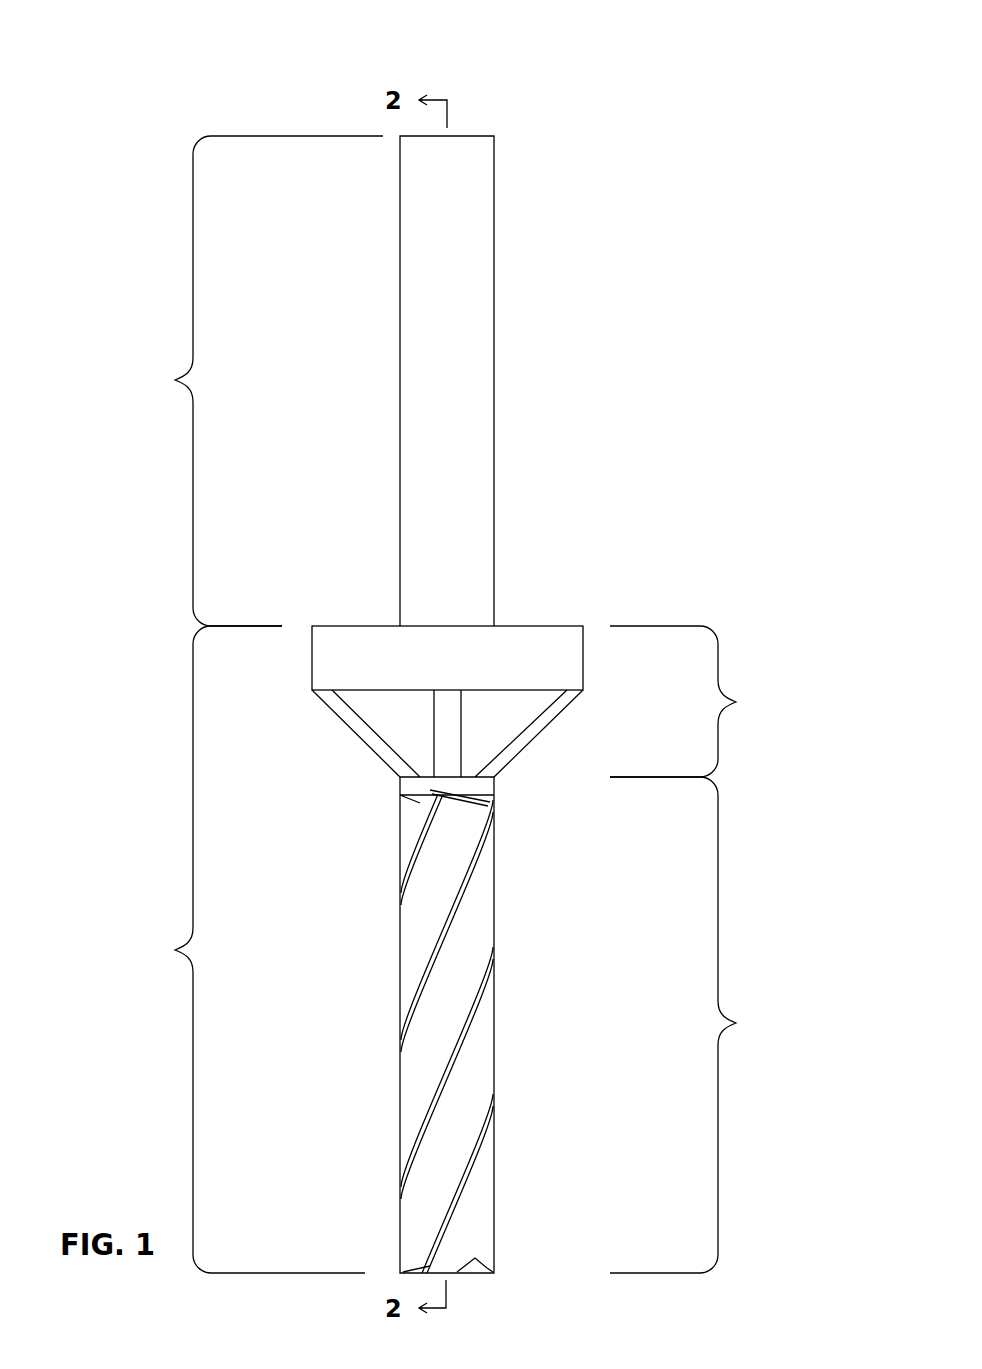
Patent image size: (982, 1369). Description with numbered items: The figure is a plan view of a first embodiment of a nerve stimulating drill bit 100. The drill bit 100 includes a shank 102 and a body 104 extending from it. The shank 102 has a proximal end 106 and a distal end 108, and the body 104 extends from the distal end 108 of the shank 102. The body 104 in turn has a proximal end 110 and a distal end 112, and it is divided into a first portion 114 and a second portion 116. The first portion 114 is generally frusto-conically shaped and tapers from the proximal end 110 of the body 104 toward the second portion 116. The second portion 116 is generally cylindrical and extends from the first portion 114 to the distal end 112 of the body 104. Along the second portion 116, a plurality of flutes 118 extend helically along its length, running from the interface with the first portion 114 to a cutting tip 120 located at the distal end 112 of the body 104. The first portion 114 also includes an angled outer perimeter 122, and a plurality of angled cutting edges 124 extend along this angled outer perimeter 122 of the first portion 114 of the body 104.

The nerve stimulating drill bit 100 is at (704, 124).
The shank 102 is at (241, 381).
The body 104 is at (232, 949).
The proximal end 106 is at (467, 156).
The distal end 108 is at (467, 600).
The proximal end 110 is at (483, 657).
The distal end 112 is at (423, 1230).
The first portion 114 is at (713, 701).
The second portion 116 is at (713, 1025).
The flutes 118 is at (487, 960).
The cutting tip 120 is at (473, 1273).
The angled outer perimeter 122 is at (483, 729).
The angled cutting edges 124 is at (439, 736).